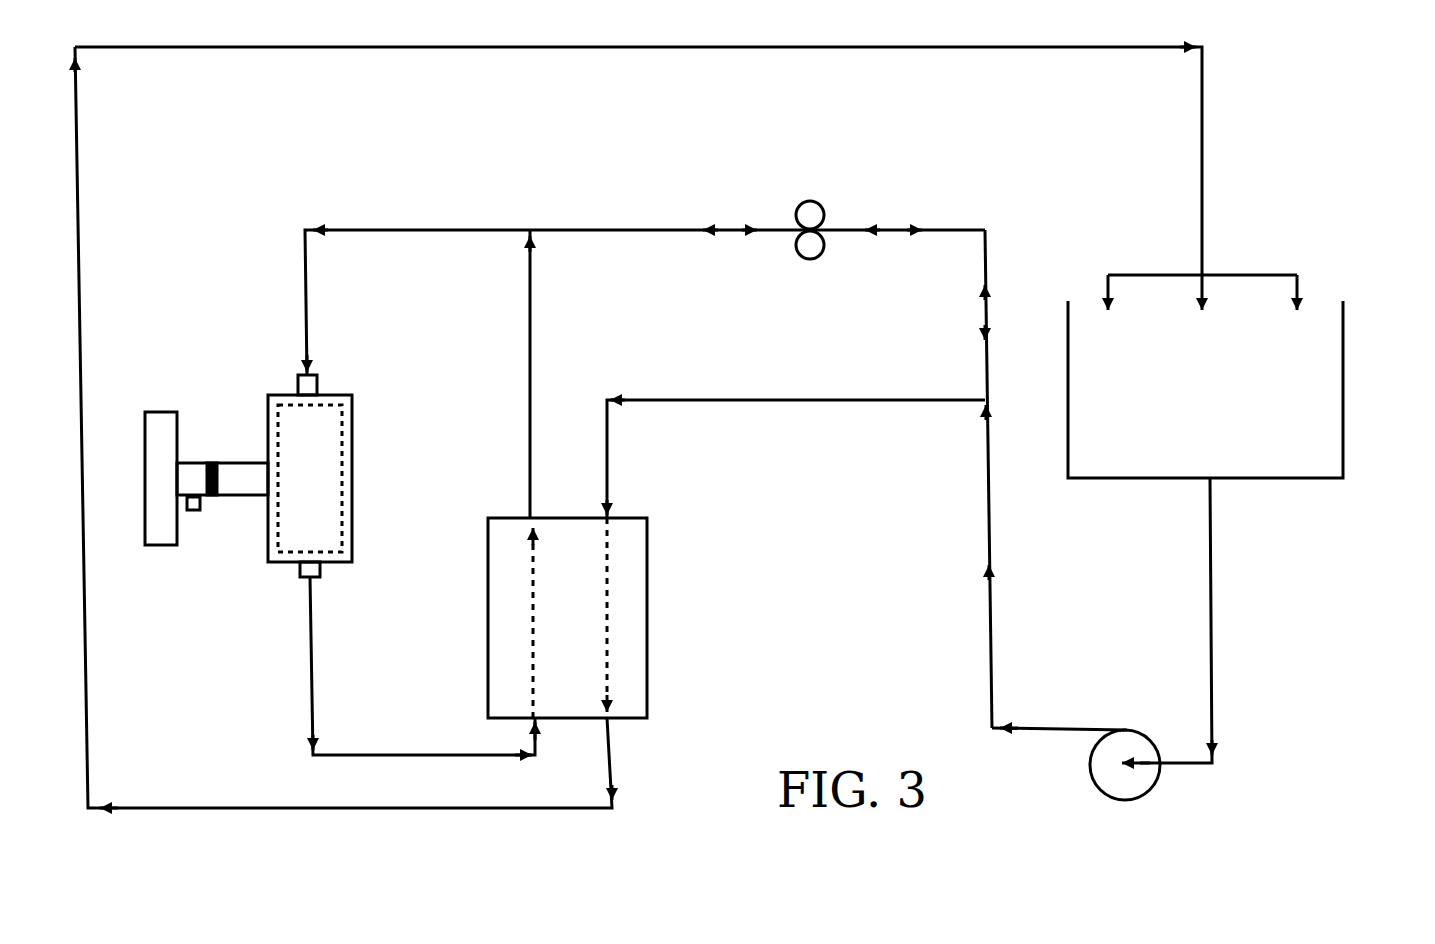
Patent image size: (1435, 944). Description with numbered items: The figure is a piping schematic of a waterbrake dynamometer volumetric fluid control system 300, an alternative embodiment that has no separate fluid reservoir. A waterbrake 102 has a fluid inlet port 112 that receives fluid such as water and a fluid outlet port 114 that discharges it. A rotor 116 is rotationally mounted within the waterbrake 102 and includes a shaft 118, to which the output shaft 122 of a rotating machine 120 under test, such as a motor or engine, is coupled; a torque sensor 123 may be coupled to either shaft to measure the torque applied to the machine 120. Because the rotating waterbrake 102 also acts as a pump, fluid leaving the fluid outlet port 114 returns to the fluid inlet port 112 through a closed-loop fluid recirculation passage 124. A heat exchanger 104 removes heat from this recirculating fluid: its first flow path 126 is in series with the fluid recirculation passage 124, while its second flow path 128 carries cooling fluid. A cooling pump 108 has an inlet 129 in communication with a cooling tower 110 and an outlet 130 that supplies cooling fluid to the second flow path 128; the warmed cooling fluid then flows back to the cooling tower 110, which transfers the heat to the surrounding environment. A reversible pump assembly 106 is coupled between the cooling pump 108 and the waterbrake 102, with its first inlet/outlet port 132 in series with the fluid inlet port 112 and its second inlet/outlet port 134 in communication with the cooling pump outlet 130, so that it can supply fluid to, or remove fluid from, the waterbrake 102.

The waterbrake dynamometer volumetric fluid control system 300 is at (1290, 117).
The waterbrake 102 is at (352, 430).
The heat exchanger 104 is at (647, 560).
The reversible pump assembly 106 is at (810, 201).
The cooling pump 108 is at (1130, 730).
The cooling tower 110 is at (1343, 395).
The fluid inlet port 112 is at (317, 380).
The fluid outlet port 114 is at (320, 570).
The rotor 116 is at (342, 500).
The shaft 118 is at (242, 463).
The rotating machine 120 is at (152, 412).
The output shaft 122 is at (187, 463).
The torque sensor 123 is at (197, 512).
The fluid recirculation passage 124 is at (388, 268).
The first flow path 126 is at (533, 640).
The second flow path 128 is at (607, 640).
The inlet 129 is at (1185, 763).
The outlet 130 is at (1050, 728).
The first inlet/outlet port 132 is at (790, 233).
The second inlet/outlet port 134 is at (830, 233).